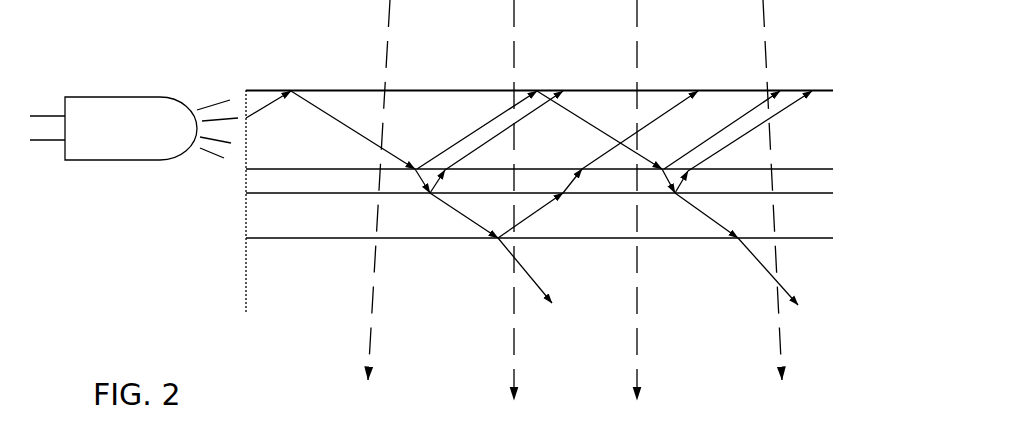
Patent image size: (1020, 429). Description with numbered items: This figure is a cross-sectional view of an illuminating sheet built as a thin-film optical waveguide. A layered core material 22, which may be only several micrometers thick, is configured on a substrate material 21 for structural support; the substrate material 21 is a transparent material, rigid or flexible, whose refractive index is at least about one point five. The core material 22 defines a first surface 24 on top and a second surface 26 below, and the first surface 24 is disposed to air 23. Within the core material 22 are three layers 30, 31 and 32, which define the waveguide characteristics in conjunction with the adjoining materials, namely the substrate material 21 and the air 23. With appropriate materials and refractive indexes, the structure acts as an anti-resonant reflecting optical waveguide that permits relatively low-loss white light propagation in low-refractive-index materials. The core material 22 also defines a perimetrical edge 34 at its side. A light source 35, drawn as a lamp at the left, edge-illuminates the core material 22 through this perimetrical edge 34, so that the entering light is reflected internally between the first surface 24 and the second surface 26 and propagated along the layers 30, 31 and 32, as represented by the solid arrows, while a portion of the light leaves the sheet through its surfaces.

The substrate material 21 is at (529, 201).
The core material 22 is at (857, 89).
The air 23 is at (267, 65).
The first surface 24 is at (552, 56).
The second surface 26 is at (555, 273).
The first layer 30 is at (192, 178).
The second layer 31 is at (205, 226).
The third layer 32 is at (196, 202).
The perimetrical edge 34 is at (194, 259).
The light source 35 is at (134, 128).